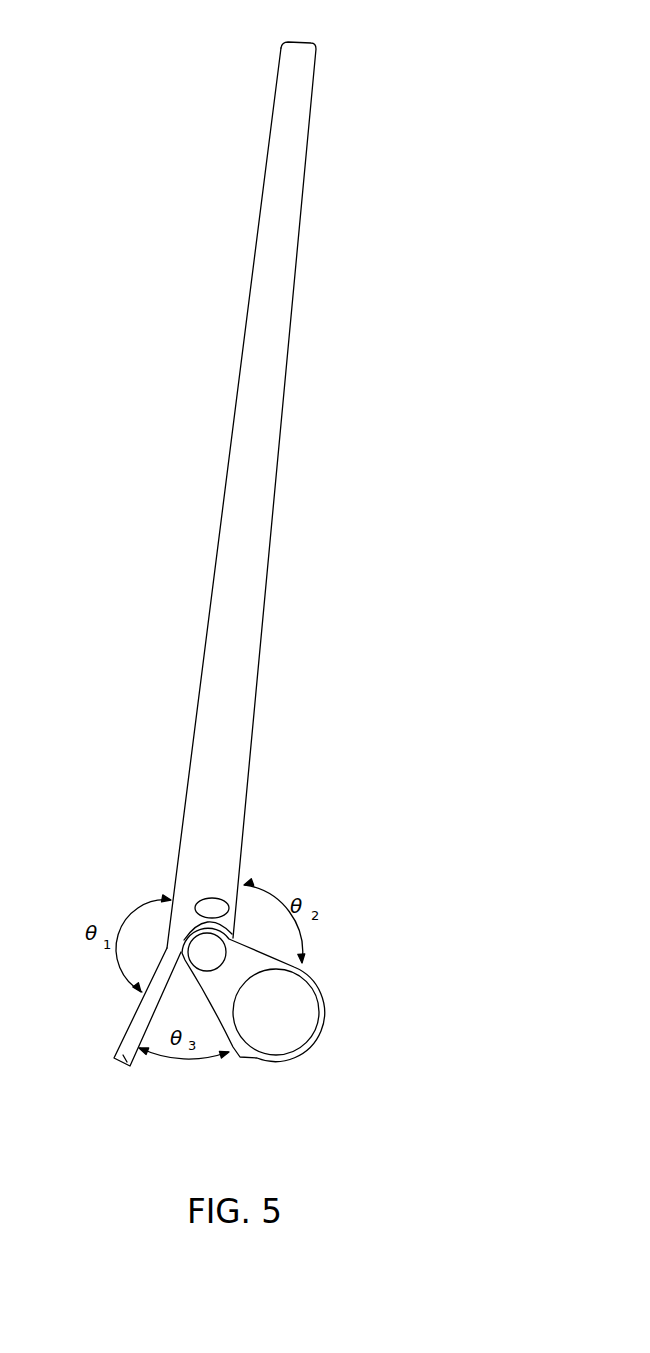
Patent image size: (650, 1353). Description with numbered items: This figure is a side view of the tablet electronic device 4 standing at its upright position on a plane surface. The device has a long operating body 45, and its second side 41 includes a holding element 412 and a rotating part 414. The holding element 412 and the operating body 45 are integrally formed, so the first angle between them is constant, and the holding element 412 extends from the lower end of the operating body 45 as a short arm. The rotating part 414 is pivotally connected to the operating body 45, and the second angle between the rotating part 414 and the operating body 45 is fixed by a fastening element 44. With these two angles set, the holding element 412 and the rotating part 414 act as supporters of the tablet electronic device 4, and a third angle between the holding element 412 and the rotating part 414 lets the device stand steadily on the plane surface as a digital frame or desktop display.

The tablet electronic device 4 is at (100, 191).
The second side 41 is at (157, 1134).
The holding element 412 is at (126, 1063).
The rotating part 414 is at (250, 1066).
The fastening element 44 is at (210, 903).
The operating body 45 is at (248, 522).